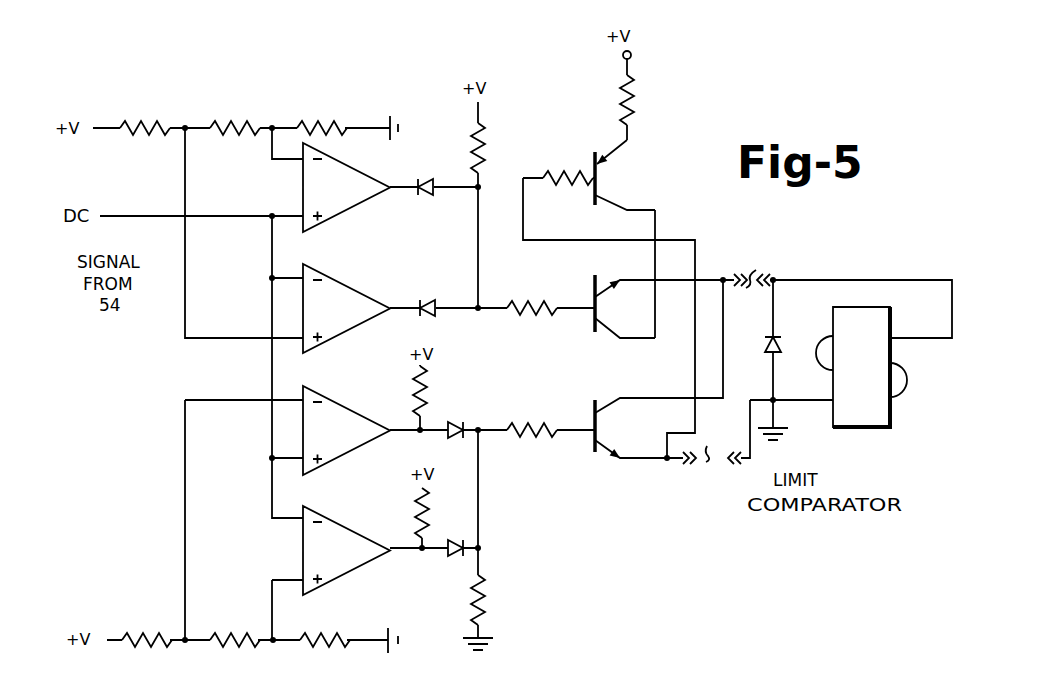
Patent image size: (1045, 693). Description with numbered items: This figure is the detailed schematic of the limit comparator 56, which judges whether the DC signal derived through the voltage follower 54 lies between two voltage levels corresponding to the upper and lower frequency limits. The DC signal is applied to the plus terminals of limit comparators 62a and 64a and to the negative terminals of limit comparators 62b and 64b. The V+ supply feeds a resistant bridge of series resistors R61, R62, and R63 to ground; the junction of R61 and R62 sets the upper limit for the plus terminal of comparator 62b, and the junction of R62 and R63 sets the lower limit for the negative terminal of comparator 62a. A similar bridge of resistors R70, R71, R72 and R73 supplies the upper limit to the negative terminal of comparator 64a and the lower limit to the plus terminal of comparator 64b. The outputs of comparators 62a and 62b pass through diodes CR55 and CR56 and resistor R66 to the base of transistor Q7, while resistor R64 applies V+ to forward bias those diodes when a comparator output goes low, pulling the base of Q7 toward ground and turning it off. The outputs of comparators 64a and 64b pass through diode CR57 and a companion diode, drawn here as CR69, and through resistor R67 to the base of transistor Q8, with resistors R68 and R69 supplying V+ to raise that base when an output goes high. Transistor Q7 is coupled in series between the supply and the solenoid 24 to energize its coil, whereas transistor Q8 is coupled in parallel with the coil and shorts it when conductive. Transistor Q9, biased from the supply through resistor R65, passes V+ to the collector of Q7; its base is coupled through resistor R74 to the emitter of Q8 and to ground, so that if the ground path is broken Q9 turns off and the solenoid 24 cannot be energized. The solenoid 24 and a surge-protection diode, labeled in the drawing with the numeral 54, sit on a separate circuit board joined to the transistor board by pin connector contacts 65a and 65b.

The limit comparator 62a is at (348, 212).
The limit comparator 62b is at (358, 288).
The limit comparator 64a is at (340, 402).
The limit comparator 64b is at (341, 524).
The contact 65a is at (752, 277).
The contact 65b is at (710, 454).
The voltage follower 54 is at (788, 340).
The solenoid 24 is at (912, 373).
The limit comparator 56 is at (670, 493).
The resistor R61 is at (145, 115).
The resistor R62 is at (235, 115).
The resistor R63 is at (322, 115).
The resistor R64 is at (499, 144).
The resistor R65 is at (650, 99).
The resistor R66 is at (536, 294).
The resistor R67 is at (536, 416).
The resistor R68 is at (442, 397).
The resistor R69 is at (443, 518).
The resistor R70 is at (146, 627).
The resistor R71 is at (234, 627).
The resistor R72 is at (325, 627).
The resistor R73 is at (499, 599).
The resistor R74 is at (559, 166).
The diode CR55 is at (434, 174).
The diode CR56 is at (434, 295).
The diode CR57 is at (436, 416).
The diode CR69 is at (434, 561).
The transistor Q7 is at (659, 306).
The transistor Q8 is at (659, 369).
The transistor Q9 is at (625, 175).